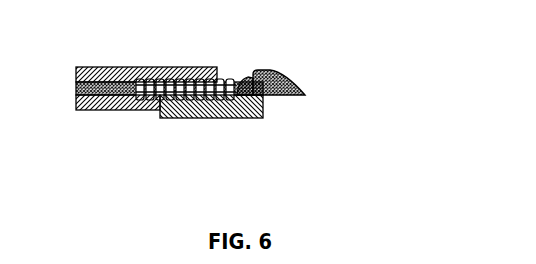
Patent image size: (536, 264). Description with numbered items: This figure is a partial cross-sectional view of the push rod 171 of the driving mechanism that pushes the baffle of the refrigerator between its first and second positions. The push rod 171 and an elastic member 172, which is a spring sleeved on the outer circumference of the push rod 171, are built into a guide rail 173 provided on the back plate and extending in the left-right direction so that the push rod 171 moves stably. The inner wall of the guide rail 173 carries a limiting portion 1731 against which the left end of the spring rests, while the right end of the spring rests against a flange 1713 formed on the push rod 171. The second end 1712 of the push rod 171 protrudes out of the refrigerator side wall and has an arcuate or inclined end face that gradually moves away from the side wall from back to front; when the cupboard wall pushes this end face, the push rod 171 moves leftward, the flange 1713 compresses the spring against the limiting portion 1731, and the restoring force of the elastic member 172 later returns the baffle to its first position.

The push rod 171 is at (262, 102).
The second end 1712 is at (298, 86).
The flange 1713 is at (251, 70).
The elastic member 172 is at (221, 85).
The guide rail 173 is at (192, 65).
The limiting portion 1731 is at (132, 95).